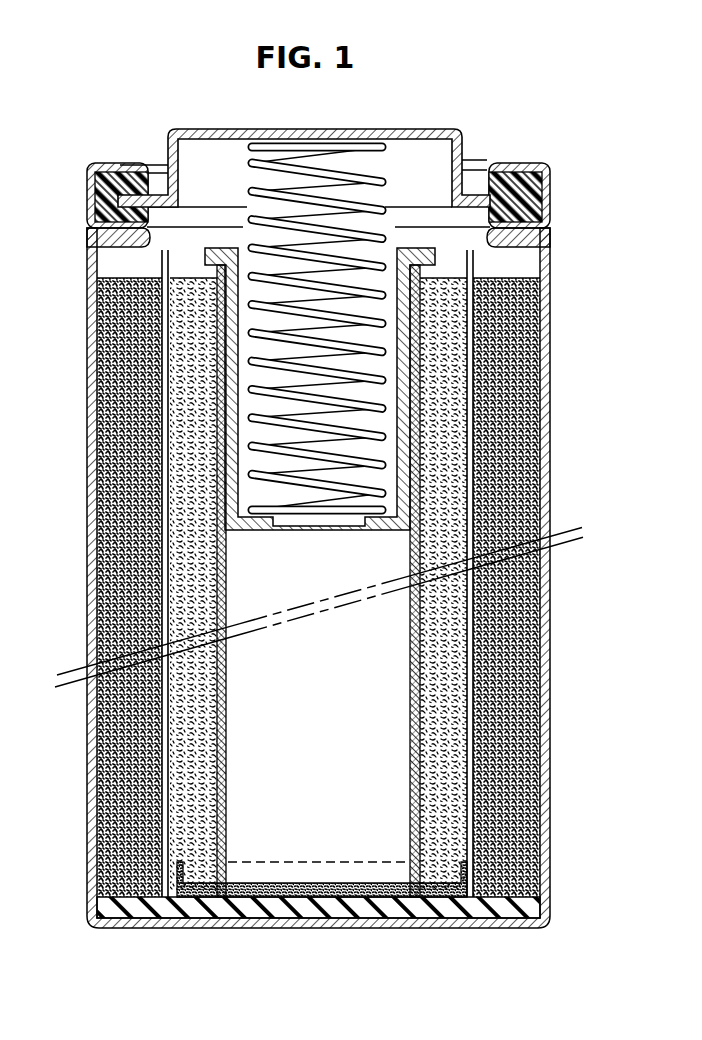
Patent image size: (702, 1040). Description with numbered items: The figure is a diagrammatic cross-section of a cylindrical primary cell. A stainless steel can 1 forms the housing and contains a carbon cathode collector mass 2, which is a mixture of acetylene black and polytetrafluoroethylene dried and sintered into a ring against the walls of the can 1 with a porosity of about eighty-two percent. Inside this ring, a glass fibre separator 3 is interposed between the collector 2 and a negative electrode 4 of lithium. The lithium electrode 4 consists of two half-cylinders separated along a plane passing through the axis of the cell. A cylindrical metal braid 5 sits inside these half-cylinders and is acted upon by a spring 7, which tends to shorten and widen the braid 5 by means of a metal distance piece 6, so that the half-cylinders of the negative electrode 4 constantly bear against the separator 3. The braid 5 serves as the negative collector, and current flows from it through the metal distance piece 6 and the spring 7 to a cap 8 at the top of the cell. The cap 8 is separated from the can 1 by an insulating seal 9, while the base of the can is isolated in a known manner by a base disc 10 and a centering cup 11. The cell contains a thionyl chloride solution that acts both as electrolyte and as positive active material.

The can 1 is at (552, 680).
The carbon cathode collector mass 2 is at (515, 762).
The glass fibre separator 3 is at (470, 635).
The negative electrode 4 is at (443, 398).
The cylindrical metal braid 5 is at (417, 543).
The metal distance piece 6 is at (402, 347).
The spring 7 is at (383, 185).
The cap 8 is at (462, 147).
The insulating seal 9 is at (547, 178).
The base disc 10 is at (470, 900).
The centering cup 11 is at (275, 895).